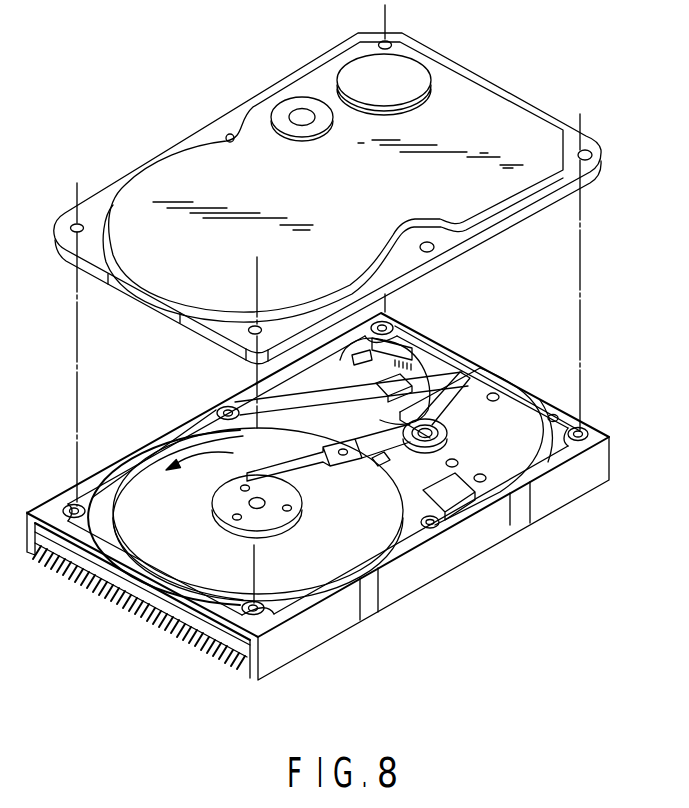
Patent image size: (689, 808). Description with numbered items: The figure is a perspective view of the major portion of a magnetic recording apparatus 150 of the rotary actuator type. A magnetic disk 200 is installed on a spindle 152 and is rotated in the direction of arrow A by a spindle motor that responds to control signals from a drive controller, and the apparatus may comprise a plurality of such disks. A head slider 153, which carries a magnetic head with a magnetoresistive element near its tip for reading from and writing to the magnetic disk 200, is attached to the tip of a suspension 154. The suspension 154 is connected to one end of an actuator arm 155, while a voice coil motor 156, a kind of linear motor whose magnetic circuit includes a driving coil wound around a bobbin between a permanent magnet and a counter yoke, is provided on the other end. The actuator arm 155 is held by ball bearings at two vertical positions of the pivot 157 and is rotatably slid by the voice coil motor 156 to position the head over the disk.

The magnetic recording apparatus 150 is at (185, 119).
The spindle 152 is at (283, 525).
The head slider 153 is at (250, 470).
The suspension 154 is at (317, 463).
The actuator arm 155 is at (380, 463).
The voice coil motor 156 is at (518, 453).
The pivot 157 is at (462, 388).
The magnetic disk 200 is at (147, 487).